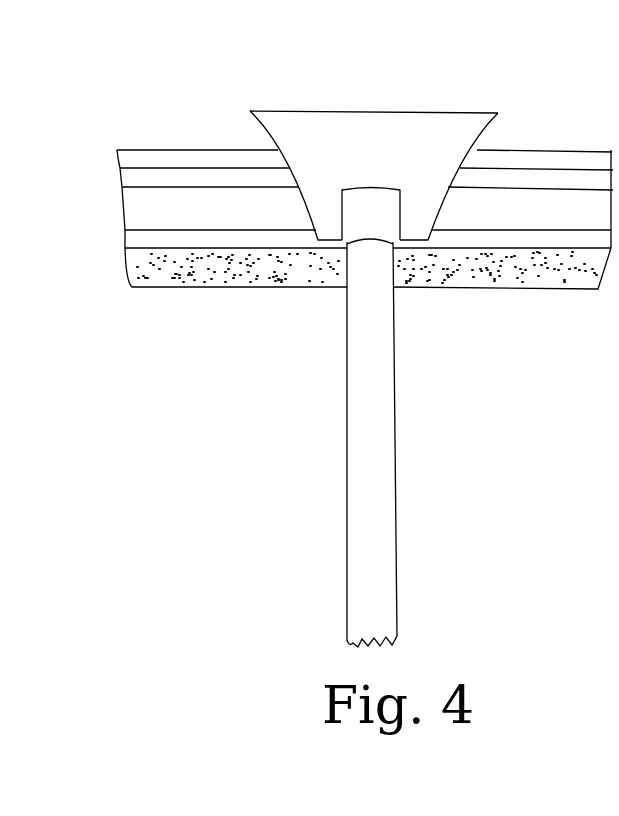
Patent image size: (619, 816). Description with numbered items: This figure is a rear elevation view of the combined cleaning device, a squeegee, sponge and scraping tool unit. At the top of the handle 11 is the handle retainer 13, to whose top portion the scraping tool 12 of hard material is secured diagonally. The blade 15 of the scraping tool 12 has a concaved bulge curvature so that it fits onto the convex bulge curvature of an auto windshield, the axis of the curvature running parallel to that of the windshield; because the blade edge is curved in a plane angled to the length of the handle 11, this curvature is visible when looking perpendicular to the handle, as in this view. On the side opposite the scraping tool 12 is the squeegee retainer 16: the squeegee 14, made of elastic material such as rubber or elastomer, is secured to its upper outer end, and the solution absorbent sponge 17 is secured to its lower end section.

The handle 11 is at (355, 411).
The scraping tool 12 is at (374, 145).
The handle retainer 13 is at (375, 210).
The squeegee 14 is at (157, 162).
The blade 15 is at (299, 111).
The squeegee retainer 16 is at (145, 213).
The solution absorbent sponge 17 is at (158, 277).